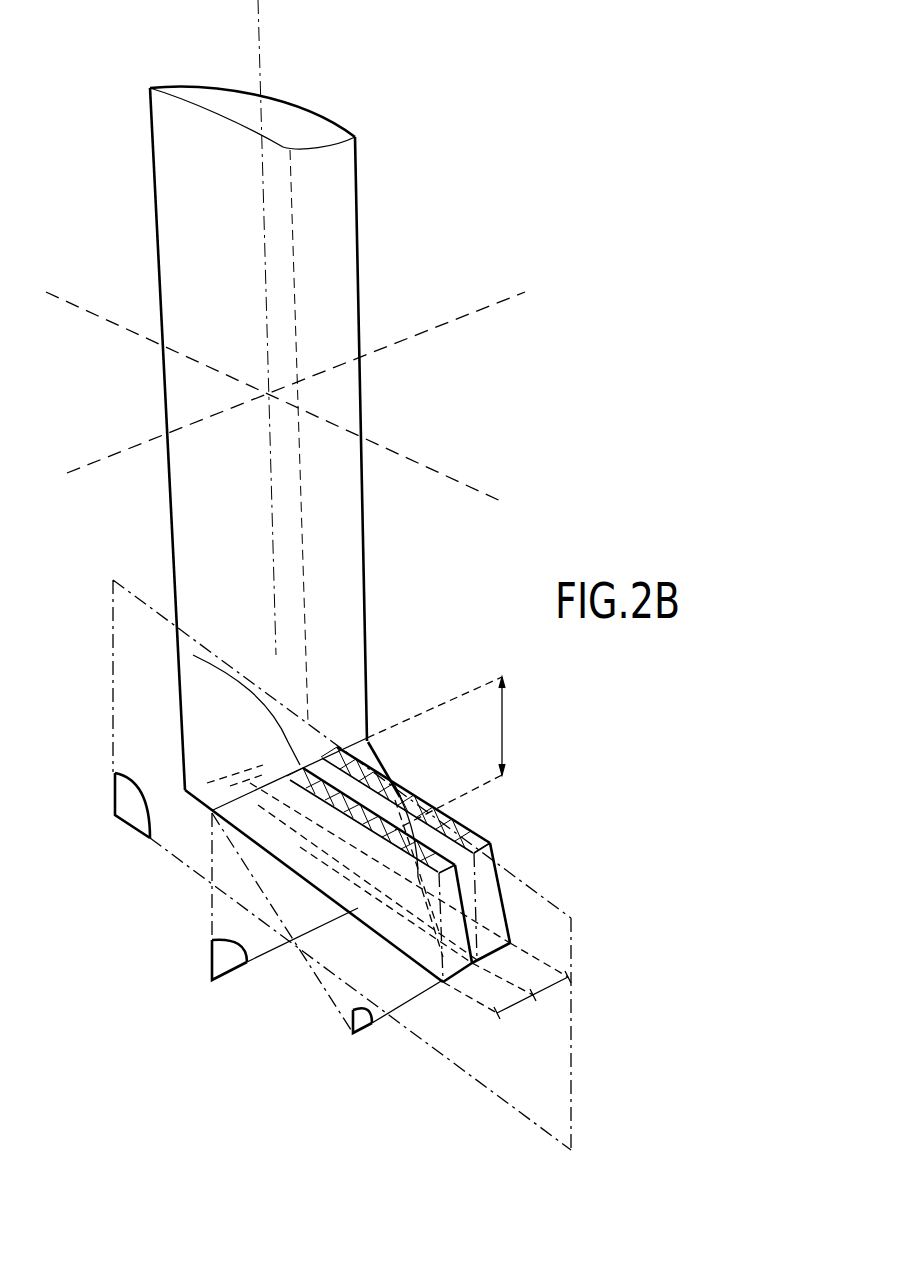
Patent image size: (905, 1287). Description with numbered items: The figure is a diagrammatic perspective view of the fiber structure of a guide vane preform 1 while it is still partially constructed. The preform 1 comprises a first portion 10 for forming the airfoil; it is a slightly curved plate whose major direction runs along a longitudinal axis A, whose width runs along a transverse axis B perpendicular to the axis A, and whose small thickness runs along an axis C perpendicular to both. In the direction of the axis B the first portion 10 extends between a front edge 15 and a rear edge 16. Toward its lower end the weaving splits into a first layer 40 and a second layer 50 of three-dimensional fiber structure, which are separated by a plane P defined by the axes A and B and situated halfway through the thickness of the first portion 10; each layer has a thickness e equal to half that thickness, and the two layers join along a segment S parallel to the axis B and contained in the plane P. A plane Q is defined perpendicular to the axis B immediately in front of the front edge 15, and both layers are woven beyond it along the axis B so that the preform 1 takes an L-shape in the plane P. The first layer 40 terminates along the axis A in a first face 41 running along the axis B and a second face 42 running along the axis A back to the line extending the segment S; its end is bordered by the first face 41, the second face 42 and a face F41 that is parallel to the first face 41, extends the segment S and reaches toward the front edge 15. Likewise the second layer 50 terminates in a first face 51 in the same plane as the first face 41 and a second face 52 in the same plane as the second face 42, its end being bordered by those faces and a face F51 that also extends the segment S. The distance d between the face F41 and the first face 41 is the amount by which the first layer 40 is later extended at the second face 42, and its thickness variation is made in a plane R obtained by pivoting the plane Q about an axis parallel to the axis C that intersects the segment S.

The preform 1 is at (370, 438).
The first portion 10 is at (182, 183).
The front edge 15 is at (340, 192).
The rear edge 16 is at (190, 517).
The first layer 40 is at (378, 855).
The first face 41 is at (243, 777).
The second face 42 is at (506, 906).
The second layer 50 is at (370, 937).
The first face 51 is at (212, 810).
The second face 52 is at (472, 964).
The face F41 is at (385, 775).
The face F51 is at (412, 792).
The longitudinal axis A is at (262, 12).
The transverse axis B is at (68, 302).
The thickness axis C is at (73, 474).
The segment S is at (247, 678).
The plane P is at (120, 822).
The plane Q is at (236, 968).
The plane R is at (370, 1036).
The distance d is at (444, 753).
The thickness e is at (507, 983).